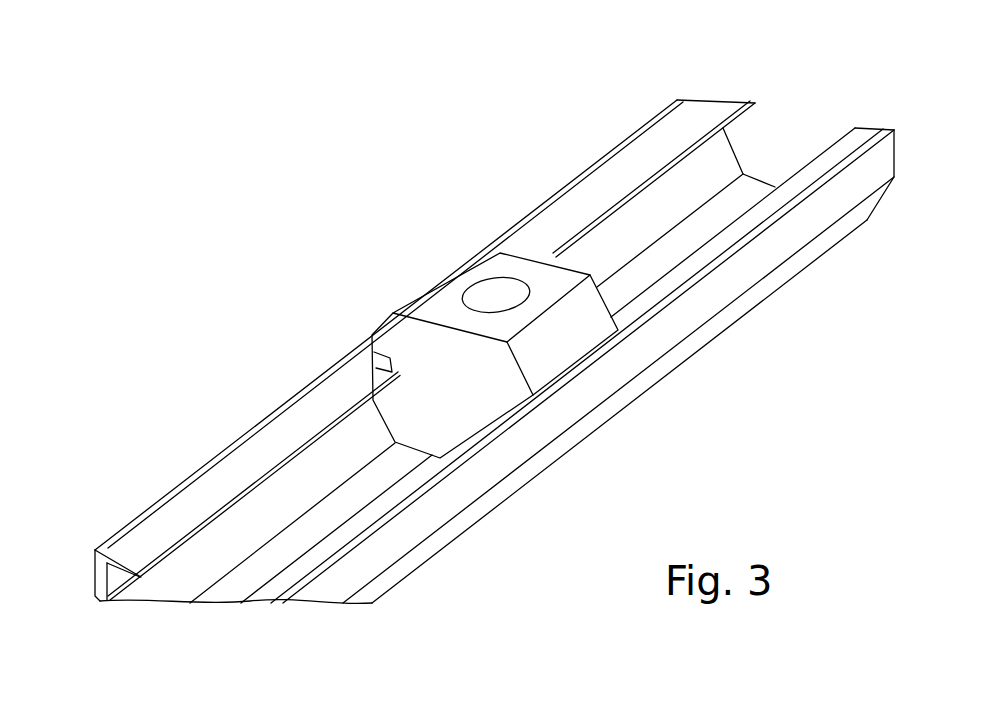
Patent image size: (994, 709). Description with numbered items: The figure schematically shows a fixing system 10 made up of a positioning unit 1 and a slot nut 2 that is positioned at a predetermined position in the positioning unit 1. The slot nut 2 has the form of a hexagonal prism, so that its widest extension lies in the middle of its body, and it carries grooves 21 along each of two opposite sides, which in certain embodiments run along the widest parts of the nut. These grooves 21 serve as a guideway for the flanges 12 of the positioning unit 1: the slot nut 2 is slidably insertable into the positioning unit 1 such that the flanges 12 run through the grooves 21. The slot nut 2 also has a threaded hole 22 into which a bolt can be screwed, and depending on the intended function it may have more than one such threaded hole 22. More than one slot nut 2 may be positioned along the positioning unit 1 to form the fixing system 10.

The fixing system 10 is at (223, 170).
The positioning unit 1 is at (150, 462).
The flanges 12 is at (706, 95).
The slot nut 2 is at (427, 296).
The grooves 21 is at (375, 344).
The threaded hole 22 is at (492, 280).